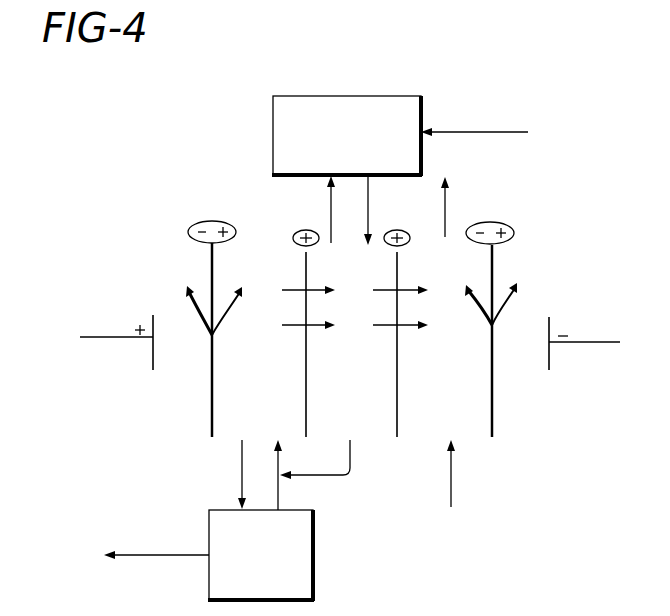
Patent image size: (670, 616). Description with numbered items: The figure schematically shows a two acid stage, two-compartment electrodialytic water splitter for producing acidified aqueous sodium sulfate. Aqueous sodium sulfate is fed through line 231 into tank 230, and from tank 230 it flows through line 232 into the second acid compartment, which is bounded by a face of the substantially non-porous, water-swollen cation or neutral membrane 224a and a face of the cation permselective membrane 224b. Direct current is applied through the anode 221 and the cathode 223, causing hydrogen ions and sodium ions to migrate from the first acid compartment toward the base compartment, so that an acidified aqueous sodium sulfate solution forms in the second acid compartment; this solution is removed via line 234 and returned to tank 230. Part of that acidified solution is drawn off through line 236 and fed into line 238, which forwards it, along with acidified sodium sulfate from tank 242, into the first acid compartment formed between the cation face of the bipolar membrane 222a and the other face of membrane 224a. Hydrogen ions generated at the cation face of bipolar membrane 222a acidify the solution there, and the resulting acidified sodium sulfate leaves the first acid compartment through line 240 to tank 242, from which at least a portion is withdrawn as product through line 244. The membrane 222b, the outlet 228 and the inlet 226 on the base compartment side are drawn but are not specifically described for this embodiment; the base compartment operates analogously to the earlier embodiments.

The tank 230 is at (392, 80).
The line 231 is at (484, 139).
The line 232 is at (400, 208).
The line 234 is at (328, 212).
The outlet line 228 is at (447, 200).
The anode 221 is at (153, 352).
The cathode 223 is at (551, 354).
The bipolar membrane 222a is at (212, 401).
The electrode (cathode) 222b is at (492, 401).
The substantially non-porous, water-swollen cation or neutral membrane 224a is at (306, 401).
The cation permselective membrane 224b is at (397, 401).
The line 238 is at (290, 455).
The line 236 is at (351, 473).
The line 240 is at (240, 483).
The inlet line 226 is at (453, 500).
The tank 242 is at (313, 557).
The line 244 is at (182, 557).